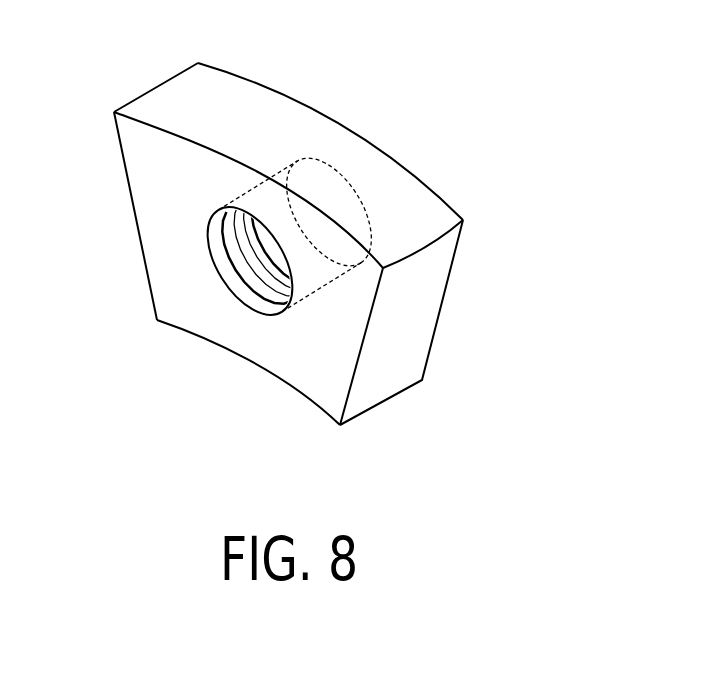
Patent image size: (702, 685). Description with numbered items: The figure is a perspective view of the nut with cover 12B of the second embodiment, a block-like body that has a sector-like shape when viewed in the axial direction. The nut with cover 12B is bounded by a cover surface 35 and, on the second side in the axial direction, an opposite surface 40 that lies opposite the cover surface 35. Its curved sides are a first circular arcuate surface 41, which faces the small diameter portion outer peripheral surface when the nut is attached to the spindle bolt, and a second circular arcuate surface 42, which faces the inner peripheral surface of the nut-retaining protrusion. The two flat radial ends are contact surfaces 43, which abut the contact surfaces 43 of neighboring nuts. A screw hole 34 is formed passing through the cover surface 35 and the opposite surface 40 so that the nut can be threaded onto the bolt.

The nut with cover 12B is at (470, 165).
The opposite surface 40 is at (405, 193).
The first circular arcuate surface 41 is at (308, 375).
The second circular arcuate surface 42 is at (250, 105).
The contact surfaces 43 is at (155, 197).
The screw hole 34 is at (250, 244).
The cover surface 35 is at (338, 343).